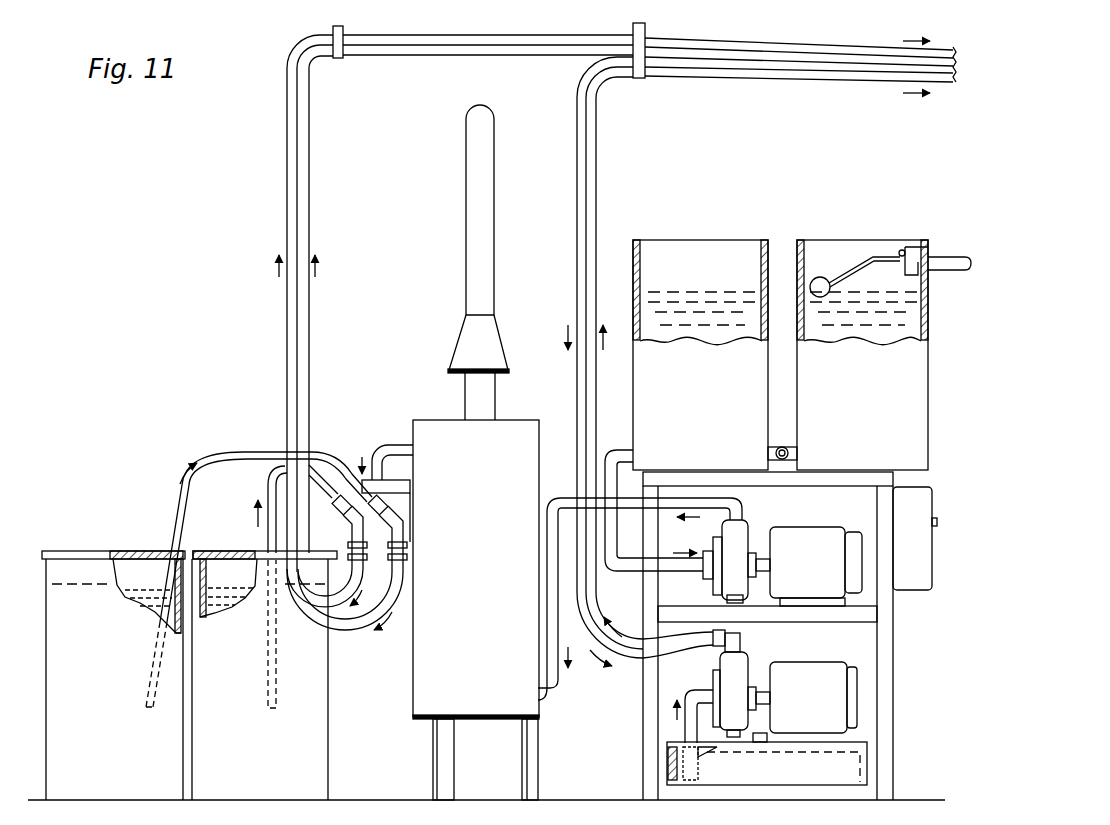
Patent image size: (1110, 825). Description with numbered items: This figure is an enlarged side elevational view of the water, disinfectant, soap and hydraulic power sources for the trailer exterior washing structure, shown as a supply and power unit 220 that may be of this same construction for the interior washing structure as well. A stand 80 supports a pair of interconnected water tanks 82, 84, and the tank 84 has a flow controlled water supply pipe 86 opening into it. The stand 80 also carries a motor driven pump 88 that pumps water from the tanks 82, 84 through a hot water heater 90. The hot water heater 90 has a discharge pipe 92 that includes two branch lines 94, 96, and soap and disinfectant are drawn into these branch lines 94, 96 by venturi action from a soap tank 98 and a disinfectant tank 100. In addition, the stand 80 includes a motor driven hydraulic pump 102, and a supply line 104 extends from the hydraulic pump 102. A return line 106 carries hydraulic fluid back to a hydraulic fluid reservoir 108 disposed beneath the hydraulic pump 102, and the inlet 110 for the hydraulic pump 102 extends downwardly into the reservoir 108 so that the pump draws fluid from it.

The supply and power unit 220 is at (256, 366).
The soap tank 98 is at (91, 572).
The disinfectant tank 100 is at (308, 697).
The branch line 96 is at (360, 575).
The branch line 94 is at (398, 580).
The discharge pipe 92 is at (388, 443).
The hot water heater 90 is at (433, 665).
The return line 106 is at (580, 158).
The supply line 104 is at (590, 198).
The water tank 82 is at (738, 258).
The water tank 84 is at (848, 252).
The flow controlled water supply pipe 86 is at (950, 258).
The stand 80 is at (888, 662).
The motor driven pump 88 is at (748, 533).
The motor driven hydraulic pump 102 is at (738, 677).
The inlet 110 is at (677, 731).
The hydraulic fluid reservoir 108 is at (845, 770).